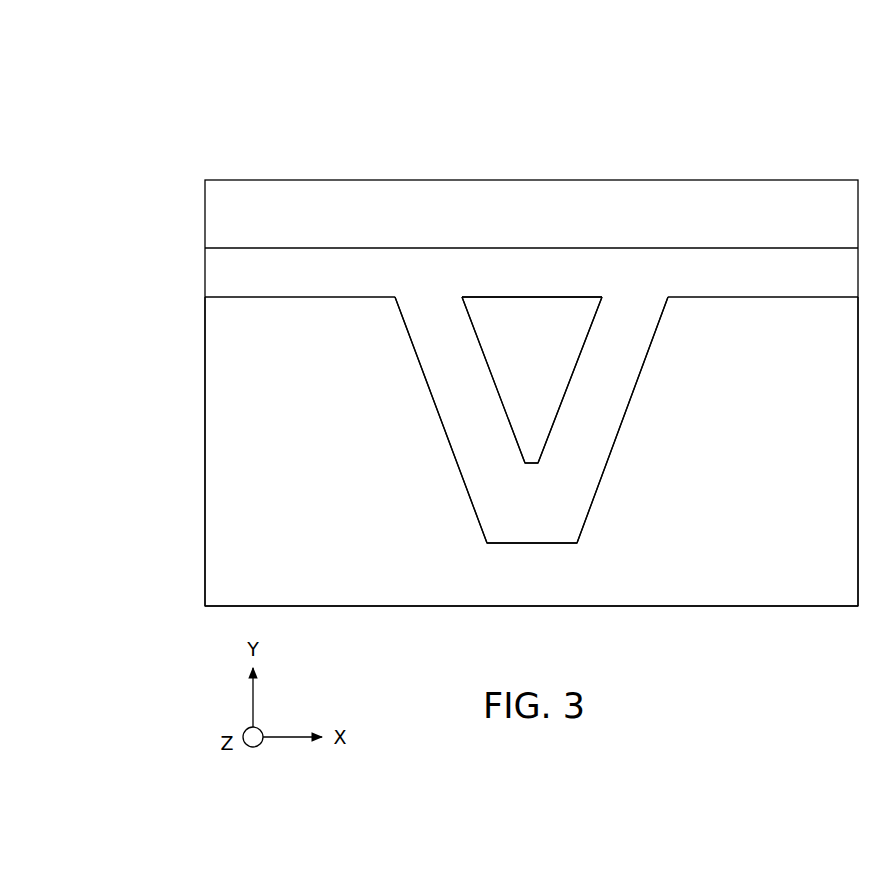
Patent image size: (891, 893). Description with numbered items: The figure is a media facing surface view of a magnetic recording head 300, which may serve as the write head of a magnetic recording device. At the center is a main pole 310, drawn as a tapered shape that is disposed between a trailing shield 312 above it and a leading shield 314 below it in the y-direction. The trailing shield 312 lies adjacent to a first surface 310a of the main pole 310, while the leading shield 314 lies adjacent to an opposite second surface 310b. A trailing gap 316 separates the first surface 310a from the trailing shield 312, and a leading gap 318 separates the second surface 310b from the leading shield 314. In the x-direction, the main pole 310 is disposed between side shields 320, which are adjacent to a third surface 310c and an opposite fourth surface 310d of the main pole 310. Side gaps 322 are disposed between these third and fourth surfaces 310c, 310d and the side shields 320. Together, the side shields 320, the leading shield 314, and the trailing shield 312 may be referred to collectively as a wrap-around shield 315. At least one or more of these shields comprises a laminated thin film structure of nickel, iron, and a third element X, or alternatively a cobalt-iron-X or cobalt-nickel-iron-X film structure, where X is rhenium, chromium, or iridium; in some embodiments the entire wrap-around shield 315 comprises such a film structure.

The magnetic recording head 300 is at (230, 108).
The wrap-around shield 315 is at (190, 340).
The trailing shield 312 is at (513, 224).
The trailing gap 316 is at (513, 281).
The leading shield 314 is at (513, 592).
The leading gap 318 is at (513, 517).
The side shields 320 is at (294, 451).
The side gaps 322 is at (449, 410).
The main pole 310 is at (513, 384).
The first surface 310a is at (571, 298).
The second surface 310b is at (529, 462).
The third surface 310c is at (477, 340).
The fourth surface 310d is at (588, 333).